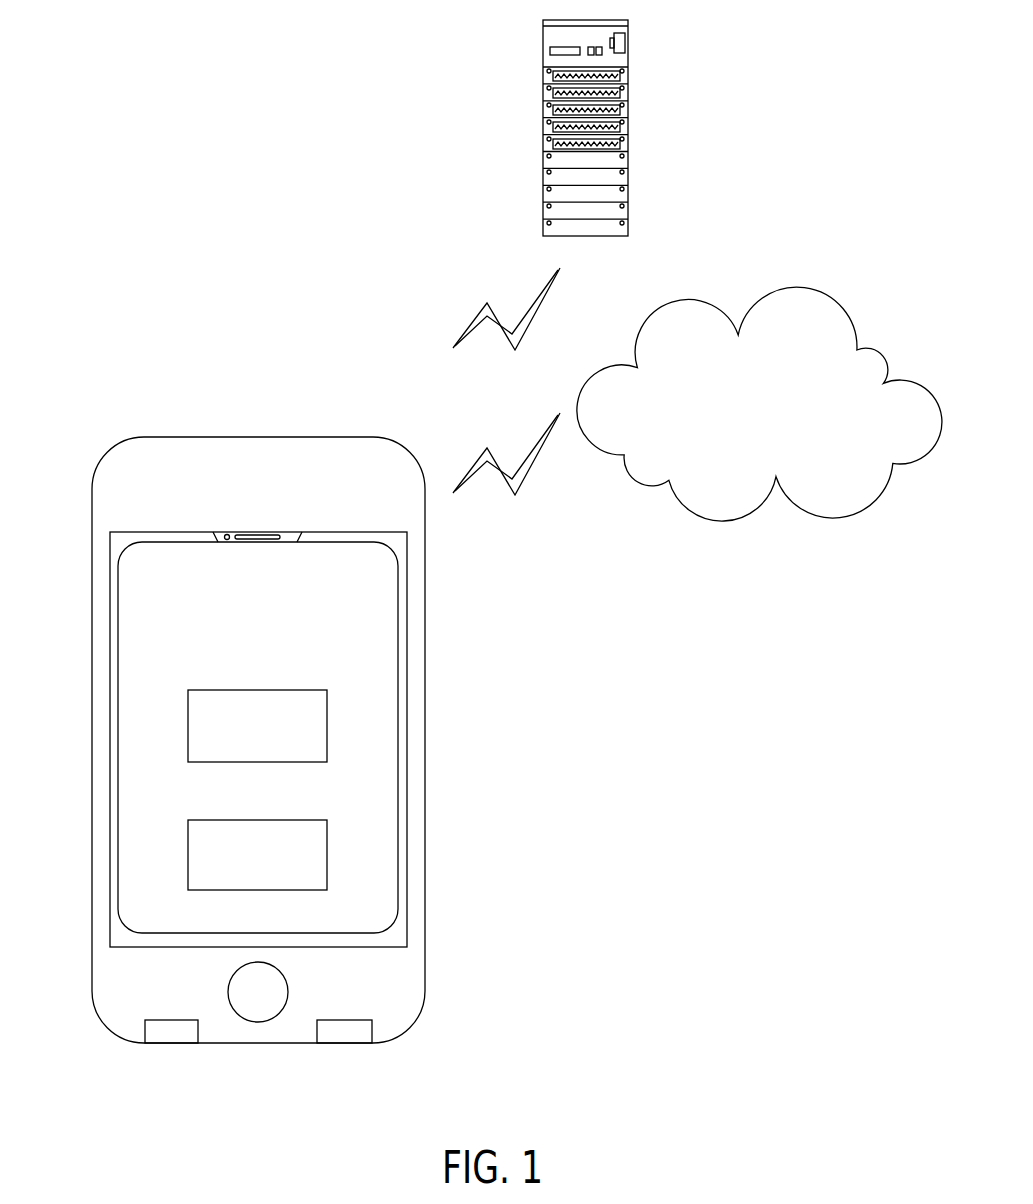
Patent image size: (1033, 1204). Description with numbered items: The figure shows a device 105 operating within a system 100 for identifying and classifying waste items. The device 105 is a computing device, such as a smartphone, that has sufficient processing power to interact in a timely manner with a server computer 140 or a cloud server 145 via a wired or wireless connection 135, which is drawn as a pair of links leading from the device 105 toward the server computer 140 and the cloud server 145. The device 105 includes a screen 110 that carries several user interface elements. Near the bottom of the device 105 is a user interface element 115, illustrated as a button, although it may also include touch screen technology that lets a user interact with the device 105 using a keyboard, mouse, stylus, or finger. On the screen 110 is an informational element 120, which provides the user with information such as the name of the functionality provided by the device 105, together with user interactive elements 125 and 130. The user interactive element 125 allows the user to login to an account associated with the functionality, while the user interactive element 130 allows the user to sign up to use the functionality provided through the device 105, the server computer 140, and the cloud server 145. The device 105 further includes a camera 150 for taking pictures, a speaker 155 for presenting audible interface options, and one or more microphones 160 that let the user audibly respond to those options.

The system 100 is at (176, 98).
The device 105 is at (145, 437).
The screen 110 is at (110, 633).
The user interface element 115 is at (260, 1013).
The informational element 120 is at (310, 595).
The user interactive element 125 is at (327, 728).
The user interactive element 130 is at (327, 855).
The wired or wireless connection 135 is at (466, 431).
The server computer 140 is at (543, 52).
The cloud server 145 is at (778, 287).
The camera 150 is at (227, 535).
The speaker 155 is at (265, 535).
The microphones 160 is at (172, 1035).